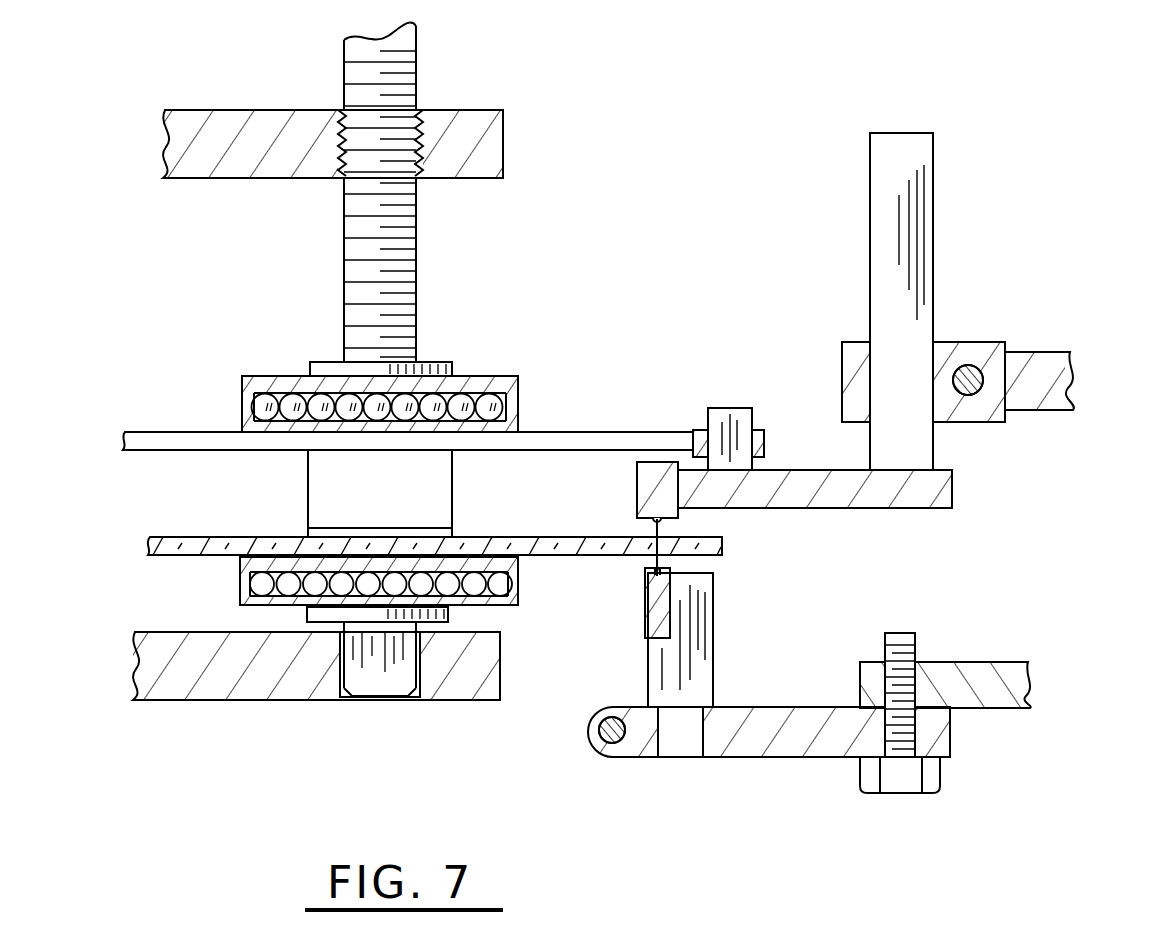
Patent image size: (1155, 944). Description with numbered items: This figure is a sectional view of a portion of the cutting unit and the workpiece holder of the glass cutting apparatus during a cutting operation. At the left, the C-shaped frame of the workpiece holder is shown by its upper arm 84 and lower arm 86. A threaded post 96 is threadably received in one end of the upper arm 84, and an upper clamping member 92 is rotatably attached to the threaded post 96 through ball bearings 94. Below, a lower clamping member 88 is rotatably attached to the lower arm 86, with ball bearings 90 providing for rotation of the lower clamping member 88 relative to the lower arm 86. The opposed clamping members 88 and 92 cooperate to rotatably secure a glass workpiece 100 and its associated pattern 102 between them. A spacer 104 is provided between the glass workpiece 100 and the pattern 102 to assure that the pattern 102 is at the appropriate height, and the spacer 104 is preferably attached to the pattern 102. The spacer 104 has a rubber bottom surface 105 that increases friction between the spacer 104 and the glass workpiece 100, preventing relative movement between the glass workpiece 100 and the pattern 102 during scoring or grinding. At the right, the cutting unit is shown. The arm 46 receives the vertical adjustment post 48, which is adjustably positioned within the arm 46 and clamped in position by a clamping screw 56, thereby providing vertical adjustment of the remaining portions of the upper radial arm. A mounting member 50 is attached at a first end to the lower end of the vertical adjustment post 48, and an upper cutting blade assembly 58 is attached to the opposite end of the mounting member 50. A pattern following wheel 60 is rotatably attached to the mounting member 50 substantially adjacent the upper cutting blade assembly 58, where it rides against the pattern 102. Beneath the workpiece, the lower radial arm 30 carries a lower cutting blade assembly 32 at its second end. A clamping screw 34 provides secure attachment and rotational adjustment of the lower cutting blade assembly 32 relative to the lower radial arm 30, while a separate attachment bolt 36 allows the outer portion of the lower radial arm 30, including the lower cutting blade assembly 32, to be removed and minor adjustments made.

The lower radial arm 30 is at (978, 664).
The lower cutting blade assembly 32 is at (690, 637).
The clamping screw 34 is at (614, 744).
The attachment bolt 36 is at (942, 772).
The arm 46 is at (1052, 403).
The vertical adjustment post 48 is at (905, 256).
The mounting member 50 is at (928, 495).
The clamping screw 56 is at (985, 375).
The upper cutting blade assembly 58 is at (650, 487).
The pattern following wheel 60 is at (760, 422).
The upper arm 84 is at (208, 108).
The lower arm 86 is at (228, 682).
The lower clamping member 88 is at (506, 582).
The ball bearings 90 is at (252, 590).
The upper clamping member 92 is at (518, 406).
The ball bearings 94 is at (492, 400).
The threaded post 96 is at (404, 252).
The glass workpiece 100 is at (196, 540).
The pattern 102 is at (240, 441).
The spacer 104 is at (396, 506).
The rubber bottom surface 105 is at (453, 526).